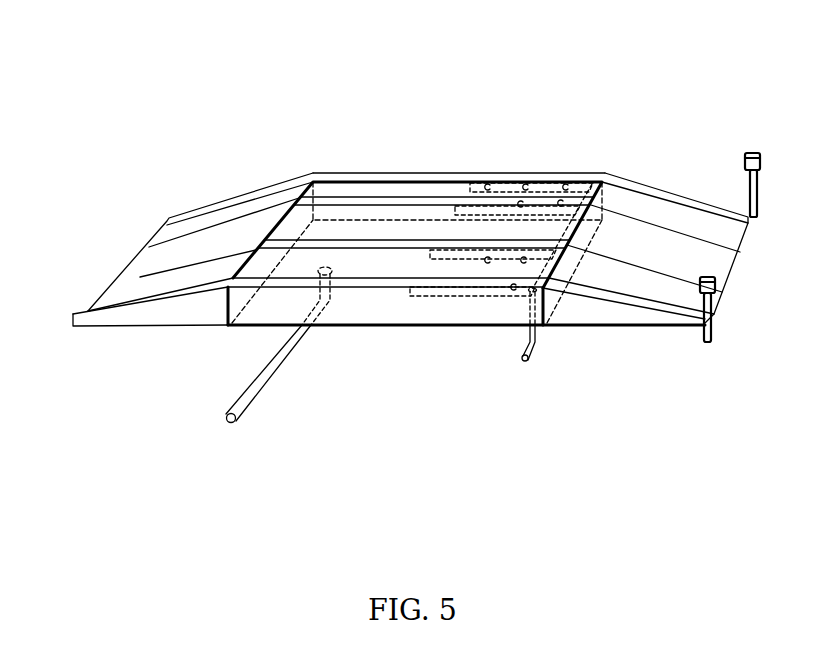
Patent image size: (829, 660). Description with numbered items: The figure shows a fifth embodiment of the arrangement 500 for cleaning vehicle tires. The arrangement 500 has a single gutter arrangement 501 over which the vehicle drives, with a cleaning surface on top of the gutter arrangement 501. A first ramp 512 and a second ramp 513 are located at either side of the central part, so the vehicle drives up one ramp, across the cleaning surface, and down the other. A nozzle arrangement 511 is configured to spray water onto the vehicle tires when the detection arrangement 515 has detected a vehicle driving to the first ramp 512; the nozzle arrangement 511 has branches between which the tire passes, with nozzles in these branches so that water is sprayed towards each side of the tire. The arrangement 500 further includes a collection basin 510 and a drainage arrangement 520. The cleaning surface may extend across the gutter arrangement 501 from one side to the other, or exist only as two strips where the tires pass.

The arrangement 500 is at (72, 45).
The gutter arrangement 501 is at (465, 171).
The collection basin 510 is at (393, 222).
The nozzle arrangement 511 is at (533, 357).
The first ramp 512 is at (662, 217).
The second ramp 513 is at (229, 216).
The detection arrangement 515 is at (715, 320).
The drainage arrangement 520 is at (276, 370).